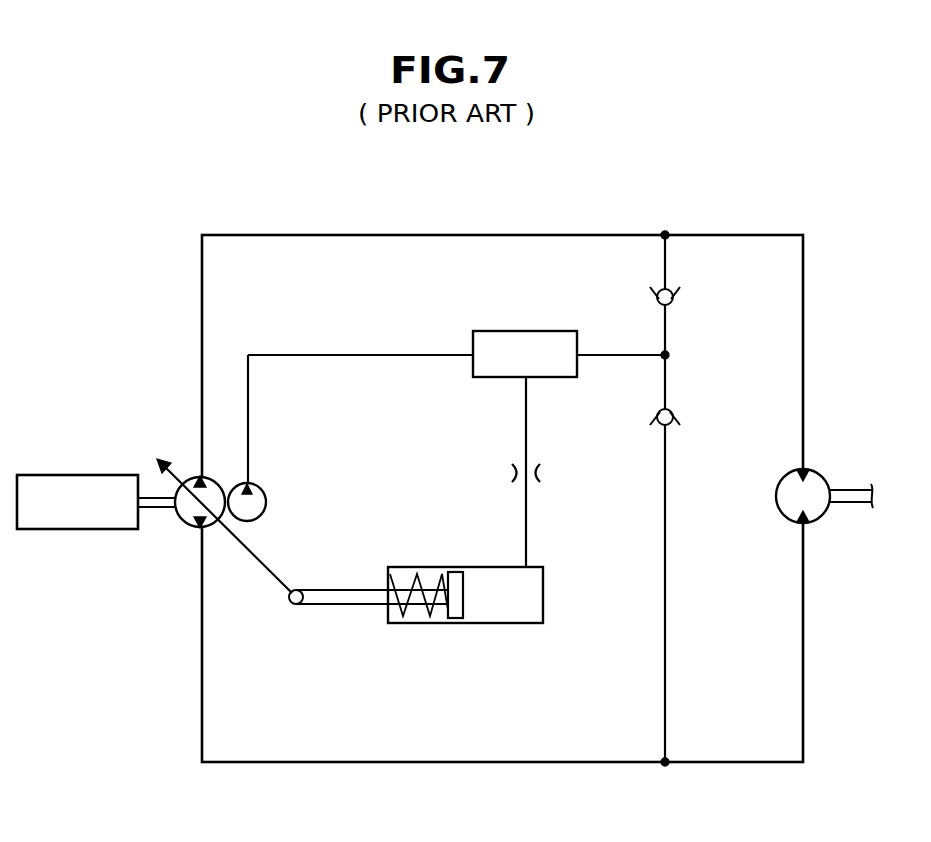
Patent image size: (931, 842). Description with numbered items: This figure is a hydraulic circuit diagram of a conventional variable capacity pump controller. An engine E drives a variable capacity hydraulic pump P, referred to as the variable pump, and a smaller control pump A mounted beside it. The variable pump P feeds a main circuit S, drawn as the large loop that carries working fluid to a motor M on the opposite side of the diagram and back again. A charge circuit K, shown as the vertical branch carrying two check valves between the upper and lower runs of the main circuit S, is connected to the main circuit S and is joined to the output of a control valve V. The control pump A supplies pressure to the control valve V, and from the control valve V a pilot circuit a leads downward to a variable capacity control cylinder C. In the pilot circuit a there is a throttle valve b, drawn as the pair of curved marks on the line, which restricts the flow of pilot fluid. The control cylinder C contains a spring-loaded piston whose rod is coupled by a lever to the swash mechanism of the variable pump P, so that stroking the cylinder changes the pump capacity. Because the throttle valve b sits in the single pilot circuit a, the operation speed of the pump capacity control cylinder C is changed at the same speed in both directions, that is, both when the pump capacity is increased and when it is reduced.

The main circuit S is at (305, 235).
The control valve V is at (522, 331).
The charge circuit K is at (675, 367).
The motor M is at (826, 473).
The pilot circuit a is at (526, 410).
The throttle valve b is at (541, 472).
The engine E is at (88, 475).
The control pump A is at (266, 492).
The variable capacity hydraulic pump P is at (180, 522).
The variable capacity control cylinder C is at (495, 623).